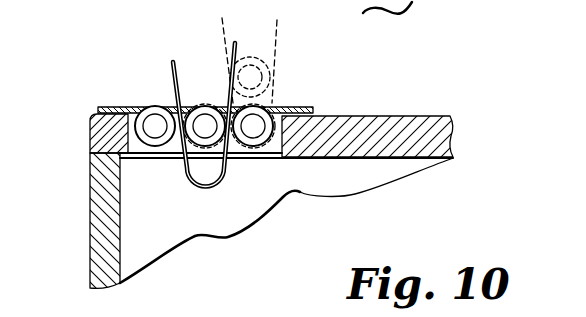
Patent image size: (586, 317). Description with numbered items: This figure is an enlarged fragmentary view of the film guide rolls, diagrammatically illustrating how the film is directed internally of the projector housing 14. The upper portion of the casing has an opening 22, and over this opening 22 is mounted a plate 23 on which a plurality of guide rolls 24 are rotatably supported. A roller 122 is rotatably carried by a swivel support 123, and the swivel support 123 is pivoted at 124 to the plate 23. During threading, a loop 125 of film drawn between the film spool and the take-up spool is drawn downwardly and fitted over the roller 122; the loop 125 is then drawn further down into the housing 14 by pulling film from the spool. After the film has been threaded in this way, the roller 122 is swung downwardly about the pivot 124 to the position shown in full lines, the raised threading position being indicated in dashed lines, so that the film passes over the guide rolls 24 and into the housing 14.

The base plate 14 is at (408, 122).
The opening 22 is at (143, 148).
The plate 23 is at (123, 107).
The guide rolls 24 is at (143, 129).
The roller 122 is at (197, 147).
The swivel support 123 is at (240, 150).
The pivot 124 is at (253, 127).
The loop 125 is at (206, 190).